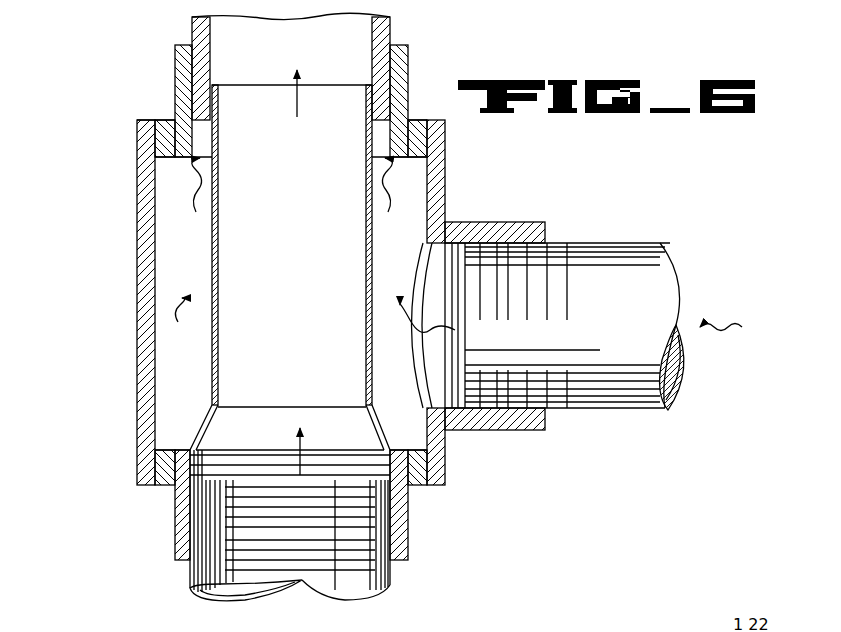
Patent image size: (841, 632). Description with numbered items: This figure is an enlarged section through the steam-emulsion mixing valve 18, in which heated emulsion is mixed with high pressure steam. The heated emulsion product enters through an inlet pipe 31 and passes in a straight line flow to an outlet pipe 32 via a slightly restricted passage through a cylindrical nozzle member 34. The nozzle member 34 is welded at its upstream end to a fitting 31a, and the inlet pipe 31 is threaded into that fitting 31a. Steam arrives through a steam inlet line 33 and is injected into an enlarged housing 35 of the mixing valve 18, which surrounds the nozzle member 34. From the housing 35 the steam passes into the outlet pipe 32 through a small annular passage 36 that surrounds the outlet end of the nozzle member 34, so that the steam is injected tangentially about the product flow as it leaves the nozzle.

The mixing valve 18 is at (100, 162).
The inlet pipe 31 is at (320, 580).
The fitting 31a is at (408, 547).
The outlet pipe 32 is at (192, 38).
The steam inlet line 33 is at (598, 252).
The nozzle member 34 is at (300, 271).
The housing 35 is at (170, 262).
The annular passage 36 is at (372, 106).